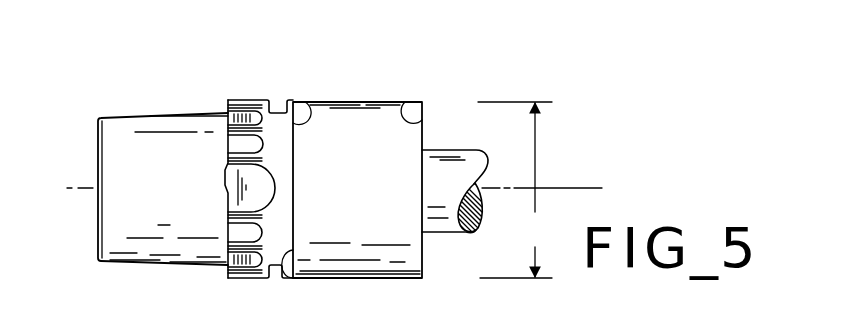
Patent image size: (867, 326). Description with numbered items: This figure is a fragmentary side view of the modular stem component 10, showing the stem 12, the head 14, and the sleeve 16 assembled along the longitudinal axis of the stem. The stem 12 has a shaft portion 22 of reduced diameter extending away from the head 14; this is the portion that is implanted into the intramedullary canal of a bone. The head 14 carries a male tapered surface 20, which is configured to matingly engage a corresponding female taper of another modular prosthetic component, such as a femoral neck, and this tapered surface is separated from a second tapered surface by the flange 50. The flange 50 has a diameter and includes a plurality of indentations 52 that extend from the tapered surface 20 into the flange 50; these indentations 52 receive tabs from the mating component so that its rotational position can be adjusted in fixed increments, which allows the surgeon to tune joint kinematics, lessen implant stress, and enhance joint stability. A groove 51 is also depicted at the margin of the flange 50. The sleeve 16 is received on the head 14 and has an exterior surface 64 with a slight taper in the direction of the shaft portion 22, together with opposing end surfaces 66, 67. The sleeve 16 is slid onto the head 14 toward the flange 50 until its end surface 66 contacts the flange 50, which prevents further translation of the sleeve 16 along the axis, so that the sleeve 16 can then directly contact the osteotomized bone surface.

The modular stem component 10 is at (549, 79).
The stem 12 is at (456, 126).
The head 14 is at (127, 76).
The sleeve 16 is at (329, 84).
The tapered surface 20 is at (155, 248).
The shaft portion 22 is at (448, 217).
The flange 50 is at (259, 88).
The groove / recess 51 is at (280, 262).
The indentations 52 is at (242, 117).
The exterior surface 64 is at (361, 120).
The end surface 66 is at (303, 96).
The end surface 67 is at (405, 100).